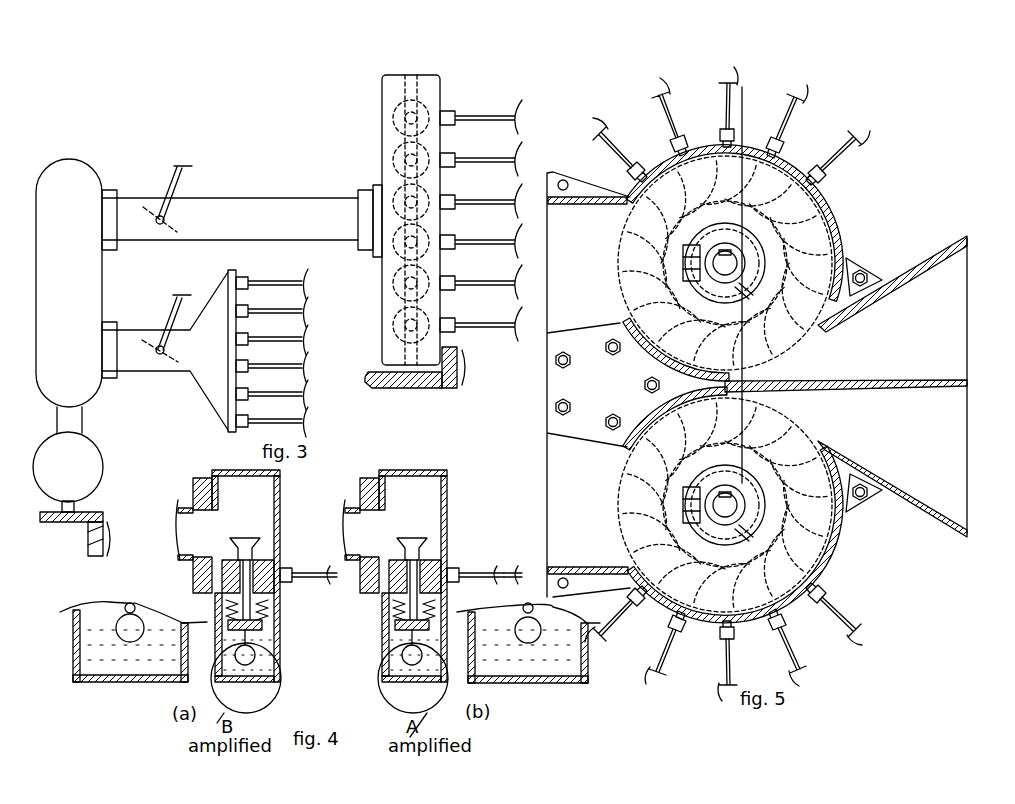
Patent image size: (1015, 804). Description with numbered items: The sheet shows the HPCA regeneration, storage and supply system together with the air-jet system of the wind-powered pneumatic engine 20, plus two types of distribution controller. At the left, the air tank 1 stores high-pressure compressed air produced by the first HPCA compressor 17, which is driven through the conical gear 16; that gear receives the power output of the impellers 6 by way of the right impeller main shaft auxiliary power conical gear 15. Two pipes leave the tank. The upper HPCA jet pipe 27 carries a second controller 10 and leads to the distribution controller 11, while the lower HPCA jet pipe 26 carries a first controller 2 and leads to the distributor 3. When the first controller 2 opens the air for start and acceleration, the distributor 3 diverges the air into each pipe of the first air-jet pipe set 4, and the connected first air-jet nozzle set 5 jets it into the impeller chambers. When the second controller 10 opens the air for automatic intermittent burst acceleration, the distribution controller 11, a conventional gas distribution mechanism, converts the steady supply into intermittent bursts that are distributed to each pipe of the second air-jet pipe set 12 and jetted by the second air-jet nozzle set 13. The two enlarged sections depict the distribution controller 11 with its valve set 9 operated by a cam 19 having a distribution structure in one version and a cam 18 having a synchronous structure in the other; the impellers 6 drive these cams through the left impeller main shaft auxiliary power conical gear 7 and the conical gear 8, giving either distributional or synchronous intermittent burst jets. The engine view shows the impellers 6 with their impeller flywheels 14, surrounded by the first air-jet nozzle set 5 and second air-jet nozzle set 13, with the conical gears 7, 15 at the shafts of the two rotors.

In FIG. 3, the air tank 1 is at (68, 283).
In FIG. 3, the first controller 2 is at (160, 346).
In FIG. 3, the distributor 3 is at (225, 372).
In FIG. 3, the first air-jet pipe set 4 is at (305, 425).
In FIG. 5, the first air-jet nozzle set 5 is at (855, 185).
In FIG. 5, the impellers 6 is at (808, 400).
In FIG. 5, the left impeller main shaft auxiliary power conical gear 7 is at (687, 283).
In FIG. 3, the conical gear 8 is at (367, 374).
In FIG. 4, the valve set 9 is at (397, 623).
In FIG. 3, the second controller 10 is at (158, 217).
In FIG. 3, the distribution controller 11 is at (417, 253).
In FIG. 3, the second air-jet pipe set 12 is at (457, 325).
In FIG. 4, the second air-jet pipe set 12 is at (266, 591).
In FIG. 5, the second air-jet nozzle set 13 is at (727, 132).
In FIG. 5, the impeller flywheels 14 is at (703, 323).
In FIG. 5, the right impeller main shaft auxiliary power conical gear 15 is at (625, 520).
In FIG. 3, the conical gear 16 is at (93, 522).
In FIG. 3, the first HPCA compressor 17 is at (82, 467).
In FIG. 4, the cam 18 is at (527, 643).
In FIG. 4, the cam 19 is at (140, 642).
In FIG. 5, the wind-powered pneumatic engine 20 is at (743, 87).
In FIG. 3, the HPCA jet pipe 26 is at (110, 330).
In FIG. 3, the HPCA jet pipe 27 is at (250, 203).